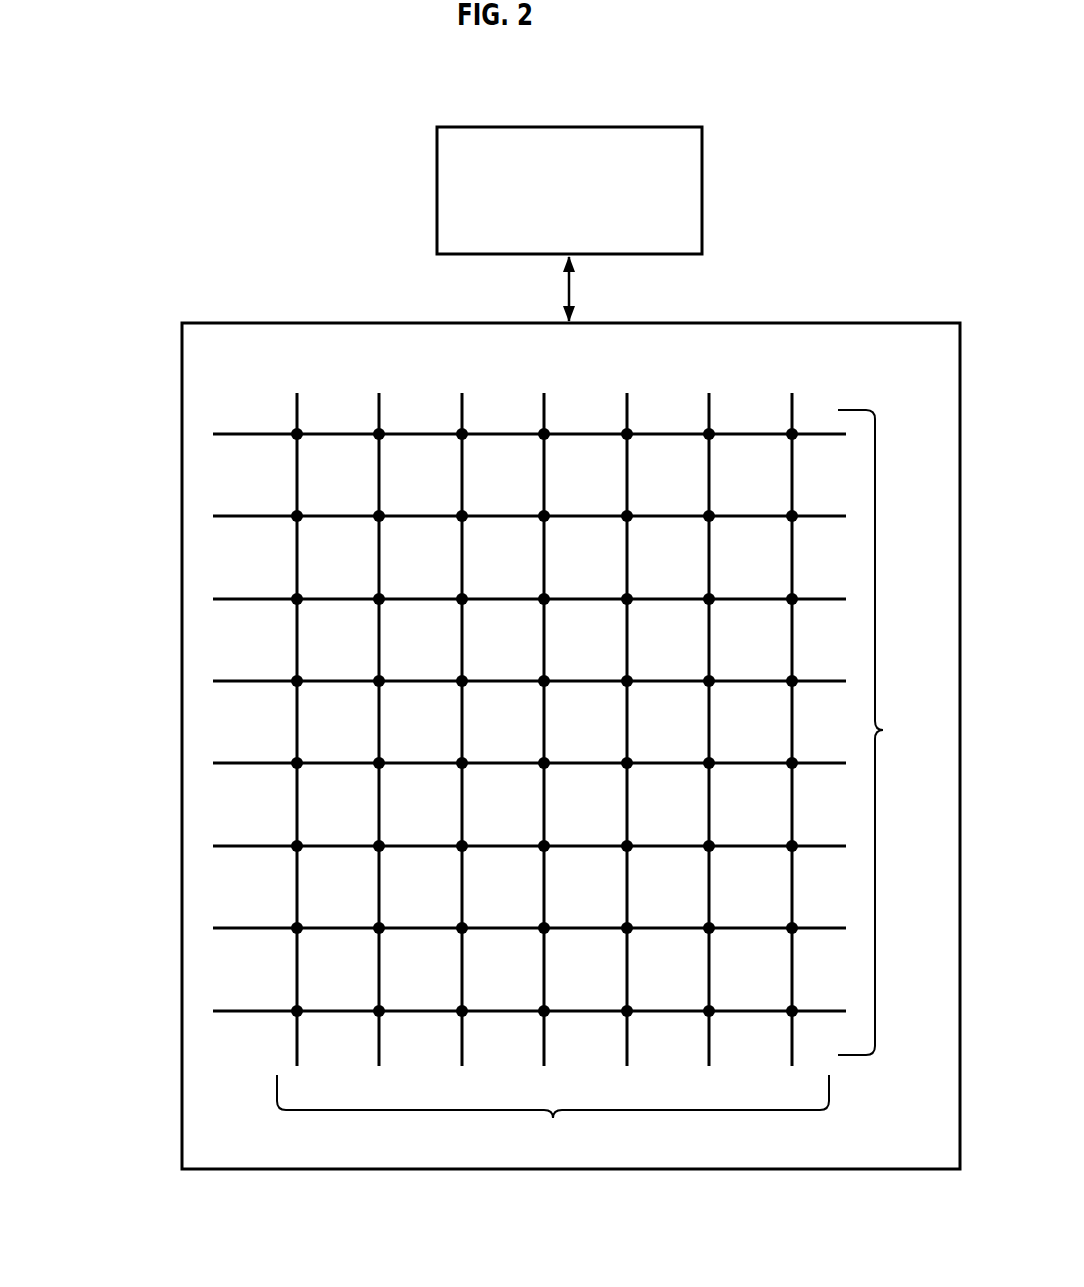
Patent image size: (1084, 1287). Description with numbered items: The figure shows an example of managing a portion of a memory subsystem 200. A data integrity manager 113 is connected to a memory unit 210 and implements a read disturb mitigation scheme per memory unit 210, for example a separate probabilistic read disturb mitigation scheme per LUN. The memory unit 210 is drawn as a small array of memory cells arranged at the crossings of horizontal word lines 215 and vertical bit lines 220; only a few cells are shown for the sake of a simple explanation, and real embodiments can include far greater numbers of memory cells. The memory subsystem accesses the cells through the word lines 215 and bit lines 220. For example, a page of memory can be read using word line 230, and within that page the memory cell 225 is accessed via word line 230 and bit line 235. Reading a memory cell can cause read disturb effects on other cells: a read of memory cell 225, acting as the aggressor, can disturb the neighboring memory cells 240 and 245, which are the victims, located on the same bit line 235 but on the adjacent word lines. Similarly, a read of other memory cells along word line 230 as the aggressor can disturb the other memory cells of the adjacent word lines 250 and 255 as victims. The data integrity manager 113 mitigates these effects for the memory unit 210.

The memory subsystem 200 is at (817, 133).
The data integrity manager 113 is at (552, 227).
The memory unit 210 is at (658, 354).
The word lines 215 is at (884, 732).
The bit lines 220 is at (553, 1114).
The memory cell 225 is at (377, 511).
The word line 230 is at (212, 515).
The bit line 235 is at (376, 638).
The memory cell 240 is at (378, 429).
The memory cell 245 is at (384, 594).
The word line 250 is at (212, 433).
The word line 255 is at (212, 598).